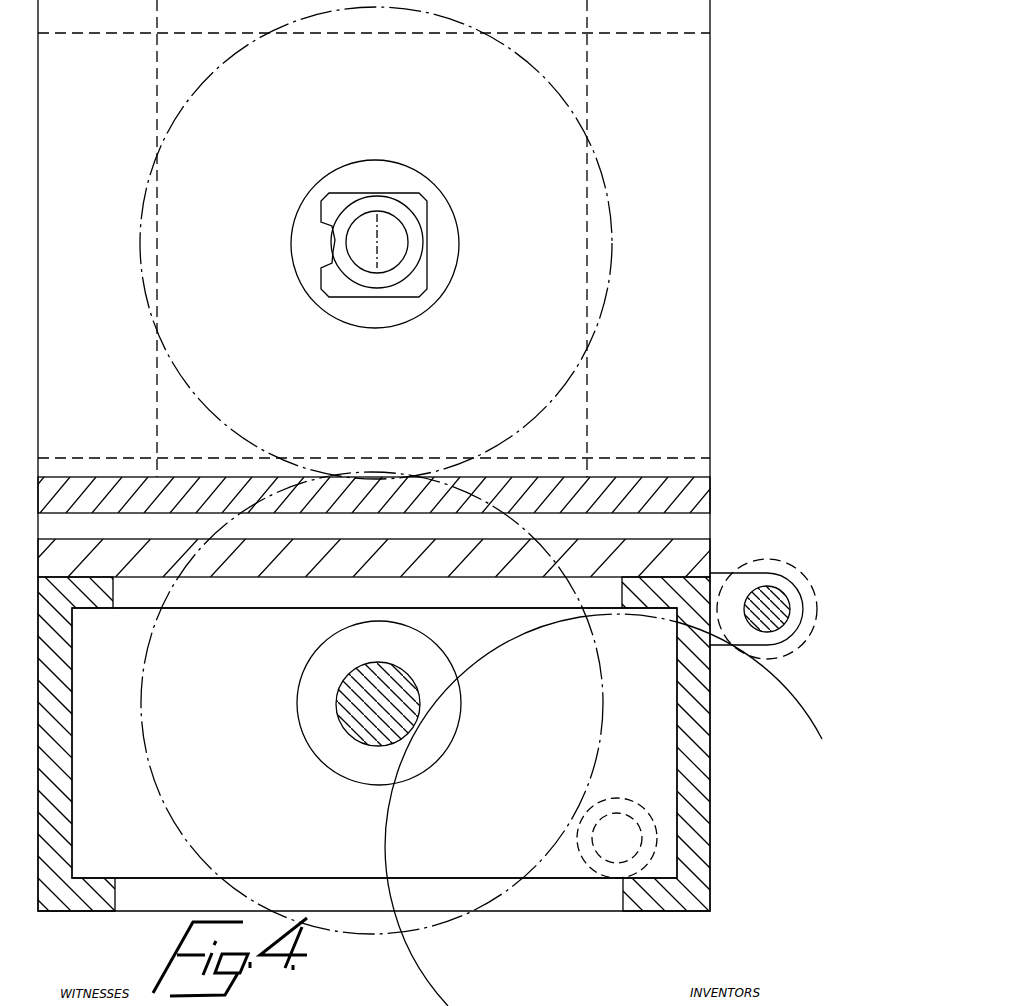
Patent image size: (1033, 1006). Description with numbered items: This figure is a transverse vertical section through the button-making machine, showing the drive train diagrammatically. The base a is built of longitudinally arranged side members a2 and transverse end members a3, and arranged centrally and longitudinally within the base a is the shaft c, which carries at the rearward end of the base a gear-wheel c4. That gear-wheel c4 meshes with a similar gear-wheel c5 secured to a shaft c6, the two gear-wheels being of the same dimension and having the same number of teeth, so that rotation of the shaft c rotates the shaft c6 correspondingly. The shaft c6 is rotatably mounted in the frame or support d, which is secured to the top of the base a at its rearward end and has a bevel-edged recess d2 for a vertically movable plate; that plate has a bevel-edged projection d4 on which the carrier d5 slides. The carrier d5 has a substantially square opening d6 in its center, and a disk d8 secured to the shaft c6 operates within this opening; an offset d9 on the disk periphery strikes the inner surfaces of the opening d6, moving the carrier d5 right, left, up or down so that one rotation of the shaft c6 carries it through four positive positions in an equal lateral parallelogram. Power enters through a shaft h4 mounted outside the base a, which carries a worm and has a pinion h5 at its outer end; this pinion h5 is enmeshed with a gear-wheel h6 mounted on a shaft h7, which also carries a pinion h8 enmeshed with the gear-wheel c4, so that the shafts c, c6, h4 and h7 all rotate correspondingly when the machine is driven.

The base a is at (38, 707).
The side members a2 is at (72, 752).
The end members a3 is at (374, 743).
The shaft c is at (338, 708).
The gear-wheel c4 is at (171, 823).
The gear-wheel c5 is at (614, 274).
The shaft c6 is at (368, 241).
The frame or support d is at (404, 562).
The bevel-edged recess d2 is at (157, 402).
The bevel-edged projection d4 is at (545, 29).
The carrier d5 is at (332, 580).
The square opening d6 is at (426, 218).
The disk d8 is at (388, 222).
The offset d9 is at (322, 244).
The shaft h4 is at (767, 604).
The pinion h5 is at (784, 657).
The gear-wheel h6 is at (383, 848).
The shaft h7 is at (618, 836).
The pinion h8 is at (577, 837).